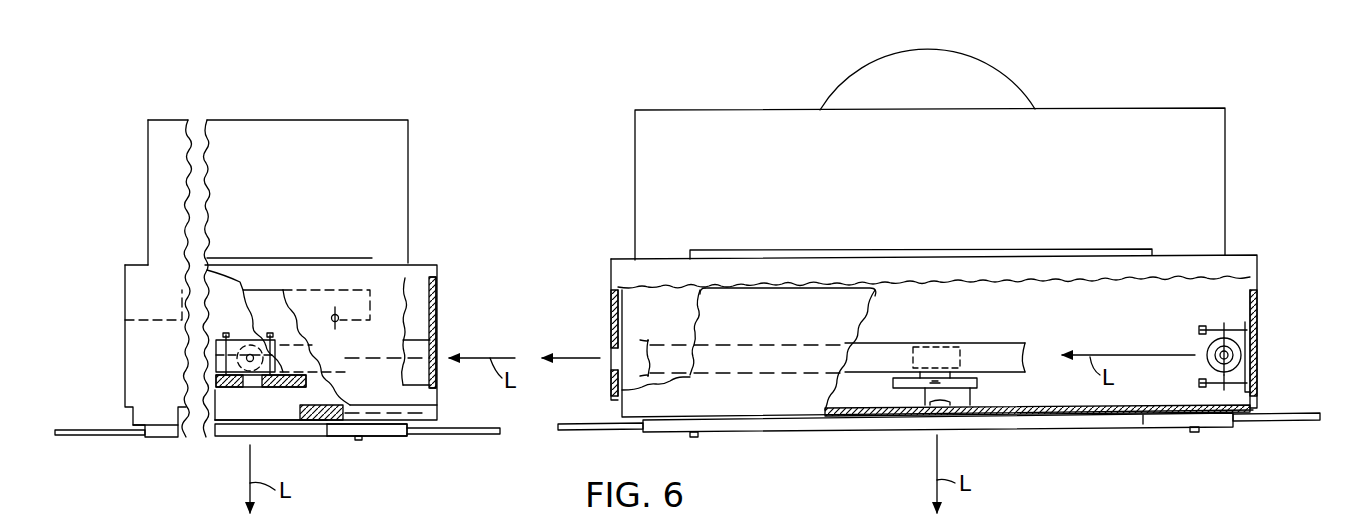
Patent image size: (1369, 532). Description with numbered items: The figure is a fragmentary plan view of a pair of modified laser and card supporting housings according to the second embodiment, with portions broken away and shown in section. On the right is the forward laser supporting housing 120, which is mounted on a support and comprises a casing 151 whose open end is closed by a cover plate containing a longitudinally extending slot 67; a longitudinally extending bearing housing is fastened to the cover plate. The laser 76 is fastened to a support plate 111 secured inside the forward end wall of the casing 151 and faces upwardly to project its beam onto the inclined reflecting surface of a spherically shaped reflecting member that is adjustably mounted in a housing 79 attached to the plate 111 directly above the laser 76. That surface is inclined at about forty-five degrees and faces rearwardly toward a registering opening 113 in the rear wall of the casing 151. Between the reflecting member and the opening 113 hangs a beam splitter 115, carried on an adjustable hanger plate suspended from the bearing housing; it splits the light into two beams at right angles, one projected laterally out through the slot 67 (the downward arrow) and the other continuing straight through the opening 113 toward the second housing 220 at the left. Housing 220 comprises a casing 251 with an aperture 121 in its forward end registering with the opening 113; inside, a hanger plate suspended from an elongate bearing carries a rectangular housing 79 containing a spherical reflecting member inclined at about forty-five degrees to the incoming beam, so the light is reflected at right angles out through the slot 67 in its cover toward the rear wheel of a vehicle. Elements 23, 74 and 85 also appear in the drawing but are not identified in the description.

The dome 23 is at (865, 80).
The slot 67 is at (268, 424).
The bearing plate 74 is at (938, 386).
The laser 76 is at (1206, 346).
The housing 79 is at (240, 347).
The fastener 85 is at (1213, 326).
The support plate 111 is at (1258, 300).
The opening 113 is at (612, 350).
The beam splitter 115 is at (913, 352).
The forward laser supporting housing 120 is at (1268, 257).
The aperture 121 is at (432, 363).
The casing 151 is at (1237, 255).
The housing 220 is at (450, 277).
The casing 251 is at (425, 263).